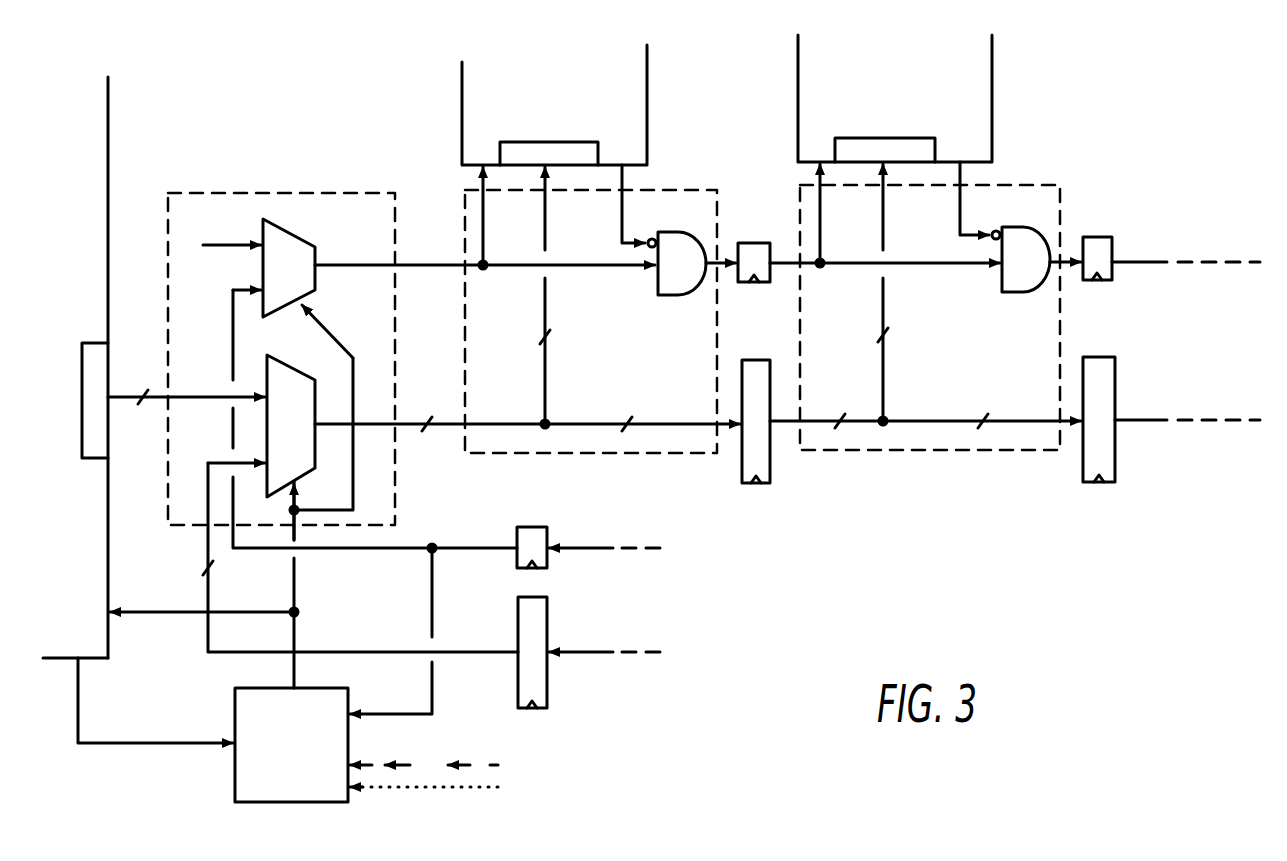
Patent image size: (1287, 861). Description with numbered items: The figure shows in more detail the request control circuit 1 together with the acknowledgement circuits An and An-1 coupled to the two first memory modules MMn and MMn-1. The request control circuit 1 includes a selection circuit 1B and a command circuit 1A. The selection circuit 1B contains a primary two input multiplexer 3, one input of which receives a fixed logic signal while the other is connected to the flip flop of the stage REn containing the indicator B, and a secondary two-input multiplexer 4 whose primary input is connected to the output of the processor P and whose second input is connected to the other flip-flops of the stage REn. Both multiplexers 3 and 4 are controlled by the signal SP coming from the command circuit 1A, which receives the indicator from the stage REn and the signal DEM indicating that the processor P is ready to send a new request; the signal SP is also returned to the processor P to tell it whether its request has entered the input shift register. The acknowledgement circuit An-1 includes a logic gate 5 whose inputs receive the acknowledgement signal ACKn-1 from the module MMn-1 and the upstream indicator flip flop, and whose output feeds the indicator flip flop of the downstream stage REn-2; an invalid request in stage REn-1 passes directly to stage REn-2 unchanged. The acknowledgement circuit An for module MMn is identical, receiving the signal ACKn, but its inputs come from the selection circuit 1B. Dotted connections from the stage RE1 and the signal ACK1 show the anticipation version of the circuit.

The command circuit 1A is at (233, 770).
The selection circuit 1B is at (262, 192).
The primary two input multiplexer 3 is at (306, 246).
The secondary two-input multiplexer 4 is at (305, 372).
The logic gate 5 is at (1005, 231).
The processor P is at (108, 140).
The memory module MMn is at (462, 130).
The memory module MMn-1 is at (992, 128).
The acknowledgement circuit An is at (660, 455).
The acknowledgement circuit An-1 is at (1030, 452).
The additional stage of input shift register REn is at (552, 573).
The register stage REn-1 is at (754, 300).
The register stage REn-2 is at (1104, 290).
The acknowledgement signal ACKn is at (620, 205).
The acknowledgement signal ACKn-1 is at (960, 197).
The acknowledgement signal ACK1 is at (468, 761).
The last stage of input shift register RE1 is at (458, 796).
The signal SP is at (300, 626).
The DEM signal DEM is at (155, 700).
The request control circuit 1 is at (219, 229).